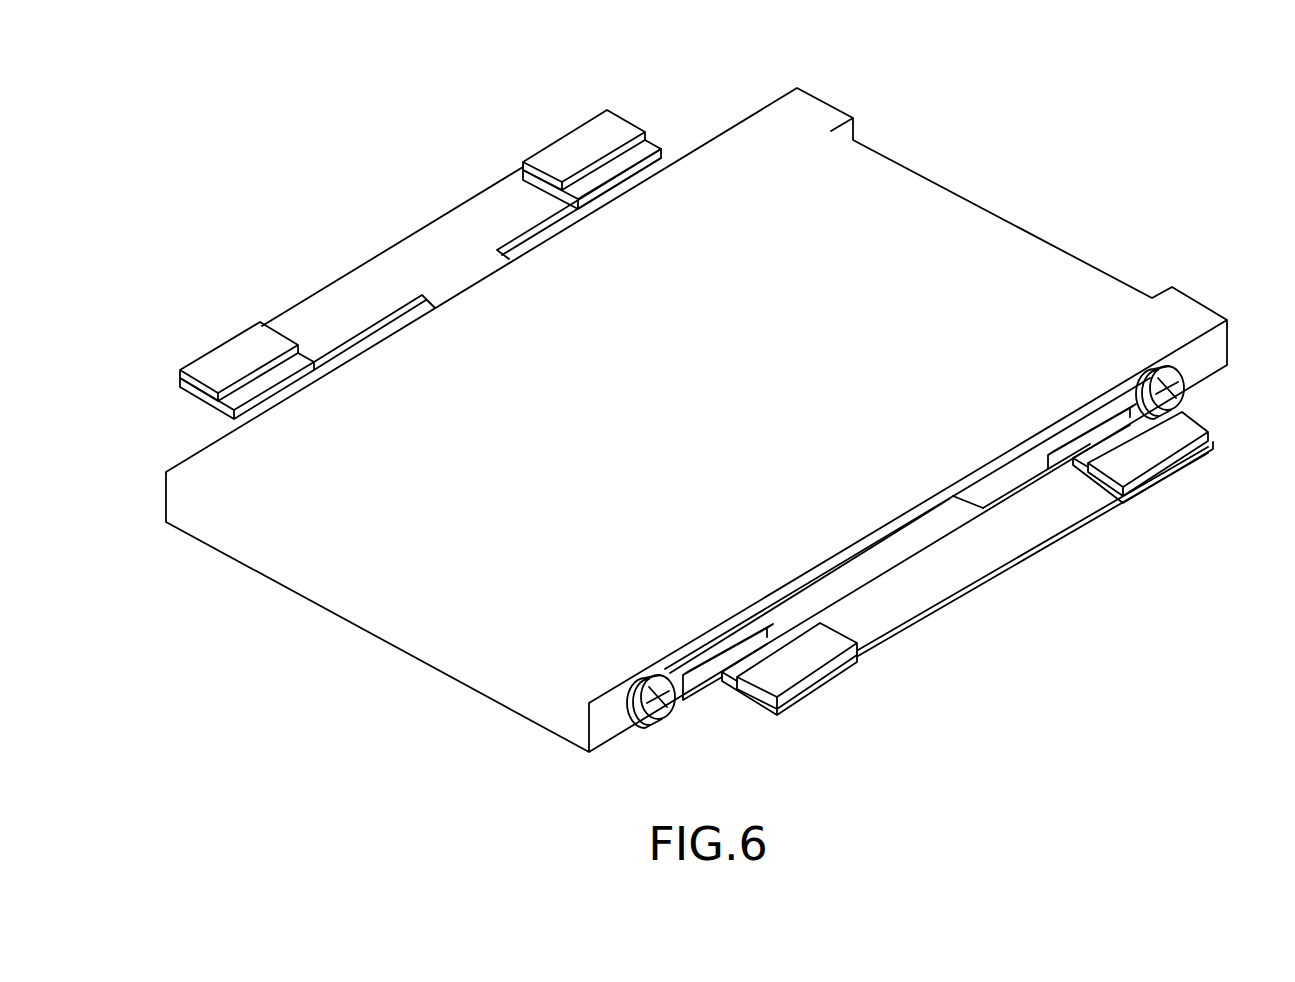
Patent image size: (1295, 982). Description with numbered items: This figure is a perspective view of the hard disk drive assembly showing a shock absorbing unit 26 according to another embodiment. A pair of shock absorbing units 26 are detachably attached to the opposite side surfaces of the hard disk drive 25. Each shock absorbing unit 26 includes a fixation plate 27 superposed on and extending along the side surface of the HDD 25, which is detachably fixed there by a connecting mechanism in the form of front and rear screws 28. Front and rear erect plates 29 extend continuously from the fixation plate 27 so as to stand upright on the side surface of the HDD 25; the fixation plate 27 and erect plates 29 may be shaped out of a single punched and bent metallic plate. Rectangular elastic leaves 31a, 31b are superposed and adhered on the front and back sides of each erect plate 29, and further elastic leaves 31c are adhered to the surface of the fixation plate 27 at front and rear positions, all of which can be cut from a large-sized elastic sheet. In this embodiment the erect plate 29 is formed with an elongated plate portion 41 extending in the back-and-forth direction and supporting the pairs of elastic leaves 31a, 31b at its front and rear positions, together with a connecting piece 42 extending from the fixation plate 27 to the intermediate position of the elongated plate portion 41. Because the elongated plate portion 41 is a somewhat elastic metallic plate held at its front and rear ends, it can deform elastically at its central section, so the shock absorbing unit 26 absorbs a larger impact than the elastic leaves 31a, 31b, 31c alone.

The hard disk drive 25 is at (1000, 232).
The shock absorbing unit 26 is at (456, 128).
The fixation plate 27 is at (1047, 442).
The screw 28 is at (1186, 386).
The erect plate 29 is at (825, 483).
The elastic leaf 31a is at (194, 399).
The elastic leaf 31b is at (583, 128).
The elastic leaf 31c is at (1077, 427).
The elongated plate portion 41 is at (405, 245).
The connecting piece 42 is at (515, 252).